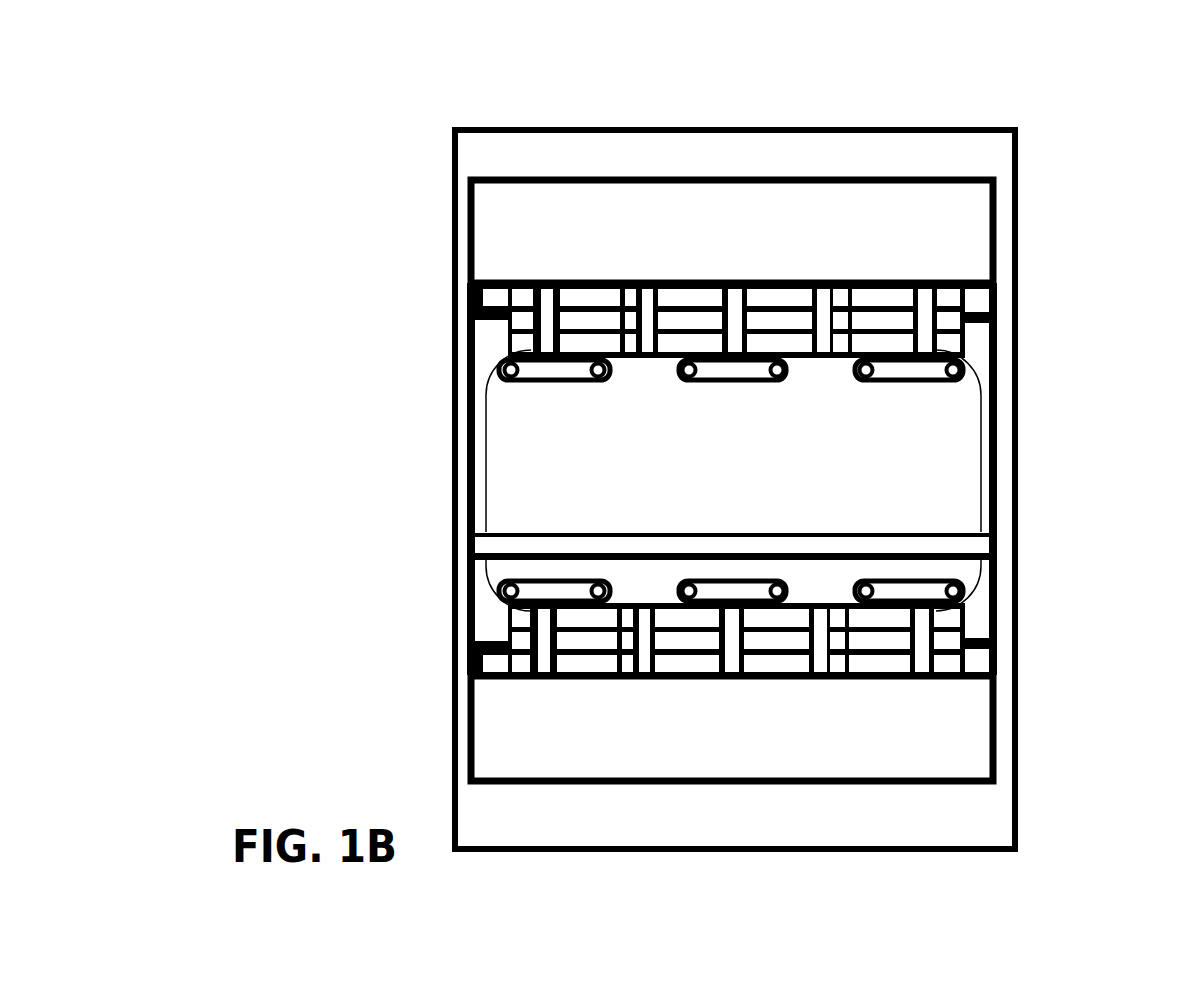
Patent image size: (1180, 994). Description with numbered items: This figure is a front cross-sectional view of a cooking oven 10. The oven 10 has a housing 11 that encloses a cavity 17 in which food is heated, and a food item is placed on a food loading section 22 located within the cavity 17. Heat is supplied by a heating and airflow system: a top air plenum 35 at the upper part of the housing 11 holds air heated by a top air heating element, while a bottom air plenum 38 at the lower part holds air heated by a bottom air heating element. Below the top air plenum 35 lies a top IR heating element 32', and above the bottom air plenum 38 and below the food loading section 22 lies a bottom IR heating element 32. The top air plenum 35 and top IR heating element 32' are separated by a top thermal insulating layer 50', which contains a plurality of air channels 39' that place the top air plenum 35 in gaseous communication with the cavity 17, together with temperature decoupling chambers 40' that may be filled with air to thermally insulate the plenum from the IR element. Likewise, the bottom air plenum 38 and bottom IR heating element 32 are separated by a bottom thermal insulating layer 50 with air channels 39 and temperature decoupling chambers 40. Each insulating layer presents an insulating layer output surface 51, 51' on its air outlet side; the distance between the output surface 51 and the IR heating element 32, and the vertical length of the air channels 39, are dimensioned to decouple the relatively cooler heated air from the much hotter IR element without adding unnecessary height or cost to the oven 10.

The oven 10 is at (330, 175).
The housing 11 is at (936, 155).
The top air plenum 35 is at (778, 228).
The bottom air plenum 38 is at (912, 740).
The cavity 17 is at (548, 480).
The food loading section 22 is at (920, 545).
The bottom thermal insulating layer 50 is at (669, 640).
The top thermal insulating layer 50' is at (669, 320).
The air channels 39 is at (715, 725).
The air channels 39' is at (694, 204).
The temperature decoupling chambers 40 is at (736, 734).
The temperature decoupling chambers 40' is at (736, 195).
The insulating layer output surface 51 is at (731, 536).
The insulating layer output surface 51' is at (731, 428).
The bottom IR heating element 32 is at (817, 611).
The top IR heating element 32' is at (817, 385).